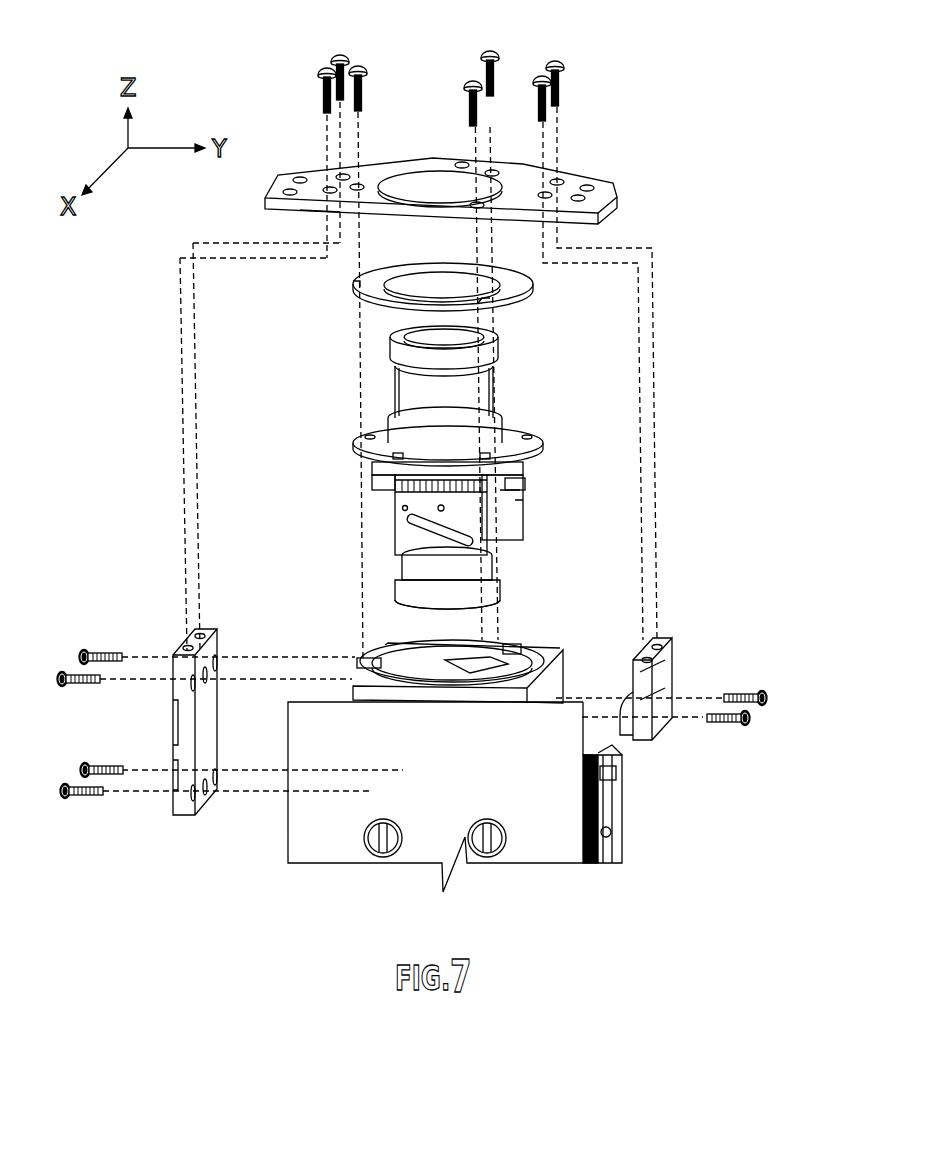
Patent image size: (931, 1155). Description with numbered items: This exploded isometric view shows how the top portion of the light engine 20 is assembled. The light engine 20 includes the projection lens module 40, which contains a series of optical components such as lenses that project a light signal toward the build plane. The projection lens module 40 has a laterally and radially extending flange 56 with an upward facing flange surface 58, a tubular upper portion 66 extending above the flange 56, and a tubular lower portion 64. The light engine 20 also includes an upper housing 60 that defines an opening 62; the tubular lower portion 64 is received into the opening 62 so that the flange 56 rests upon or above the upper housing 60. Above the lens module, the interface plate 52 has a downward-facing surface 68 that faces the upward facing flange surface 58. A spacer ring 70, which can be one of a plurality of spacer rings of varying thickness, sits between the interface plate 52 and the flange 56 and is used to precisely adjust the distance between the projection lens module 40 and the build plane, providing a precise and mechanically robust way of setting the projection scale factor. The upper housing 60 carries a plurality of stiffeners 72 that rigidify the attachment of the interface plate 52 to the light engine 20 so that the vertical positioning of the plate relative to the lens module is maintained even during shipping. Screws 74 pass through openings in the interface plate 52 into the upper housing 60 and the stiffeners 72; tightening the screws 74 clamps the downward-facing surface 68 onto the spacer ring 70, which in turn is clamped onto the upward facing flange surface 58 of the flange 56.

The light engine 20 is at (560, 826).
The projection lens module 40 is at (417, 387).
The interface plate 52 is at (615, 195).
The flange 56 is at (343, 462).
The upward facing flange surface 58 is at (520, 434).
The upper housing 60 is at (565, 652).
The opening 62 is at (416, 664).
The tubular lower portion 64 is at (410, 538).
The tubular upper portion 66 is at (470, 402).
The downward-facing surface 68 is at (332, 226).
The spacer ring 70 is at (520, 285).
The stiffeners 72 is at (660, 682).
The screws 74 is at (563, 65).